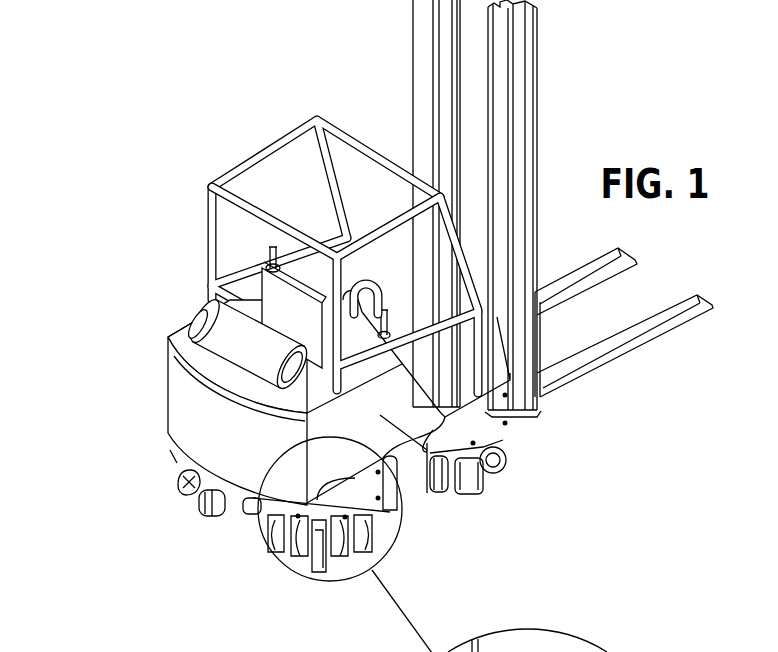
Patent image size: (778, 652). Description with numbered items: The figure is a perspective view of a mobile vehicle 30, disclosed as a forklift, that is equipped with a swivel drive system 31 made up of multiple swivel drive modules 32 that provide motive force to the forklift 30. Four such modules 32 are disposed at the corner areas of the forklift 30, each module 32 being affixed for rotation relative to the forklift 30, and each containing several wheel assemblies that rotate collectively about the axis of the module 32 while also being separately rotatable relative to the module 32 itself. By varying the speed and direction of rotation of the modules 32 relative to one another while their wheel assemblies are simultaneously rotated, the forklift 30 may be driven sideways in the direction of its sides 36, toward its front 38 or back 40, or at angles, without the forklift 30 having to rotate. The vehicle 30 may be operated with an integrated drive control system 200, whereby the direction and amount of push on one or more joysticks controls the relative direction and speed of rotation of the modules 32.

The mobile vehicle 30 is at (142, 225).
The swivel drive system 31 is at (144, 497).
The swivel drive module 32 is at (178, 538).
The side 36 is at (200, 320).
The front 38 is at (536, 118).
The back 40 is at (196, 430).
The integrated drive control system 200 is at (251, 233).